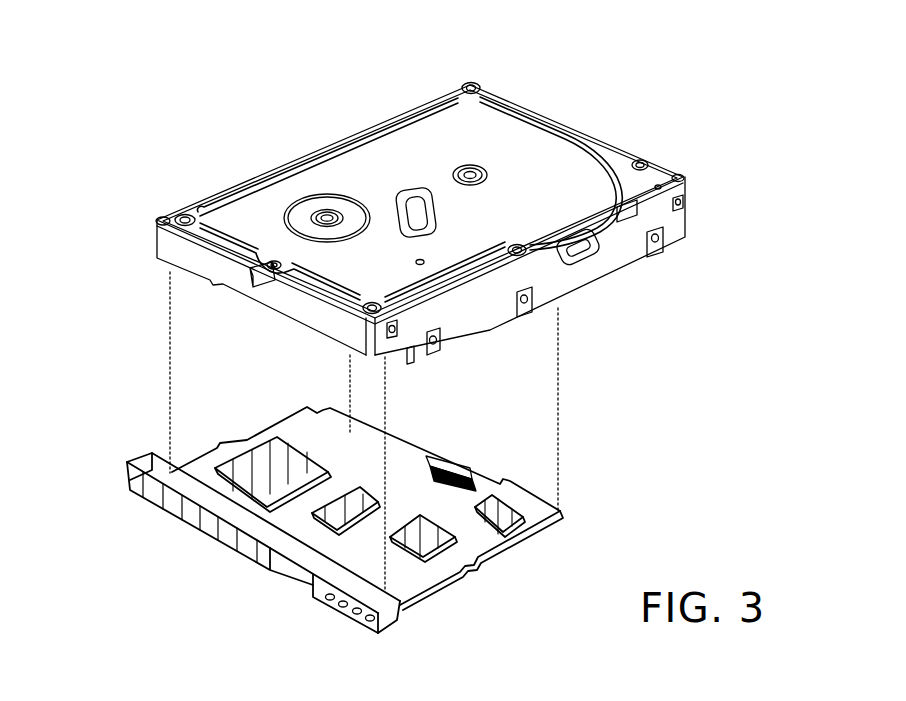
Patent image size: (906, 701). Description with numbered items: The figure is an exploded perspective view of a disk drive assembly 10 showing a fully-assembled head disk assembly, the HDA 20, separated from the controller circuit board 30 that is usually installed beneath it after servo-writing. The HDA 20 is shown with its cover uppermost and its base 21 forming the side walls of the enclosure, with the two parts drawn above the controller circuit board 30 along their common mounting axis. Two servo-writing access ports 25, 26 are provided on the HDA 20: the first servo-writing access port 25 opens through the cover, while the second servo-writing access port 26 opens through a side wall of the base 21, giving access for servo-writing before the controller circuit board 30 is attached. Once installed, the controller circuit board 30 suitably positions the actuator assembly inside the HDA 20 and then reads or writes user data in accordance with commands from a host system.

The disk drive assembly 10 is at (182, 116).
The HDA 20 is at (586, 128).
The disk drive base 21 is at (676, 222).
The servo-writing access port 25 is at (413, 200).
The servo-writing access port 26 is at (586, 250).
The controller circuit board 30 is at (434, 592).